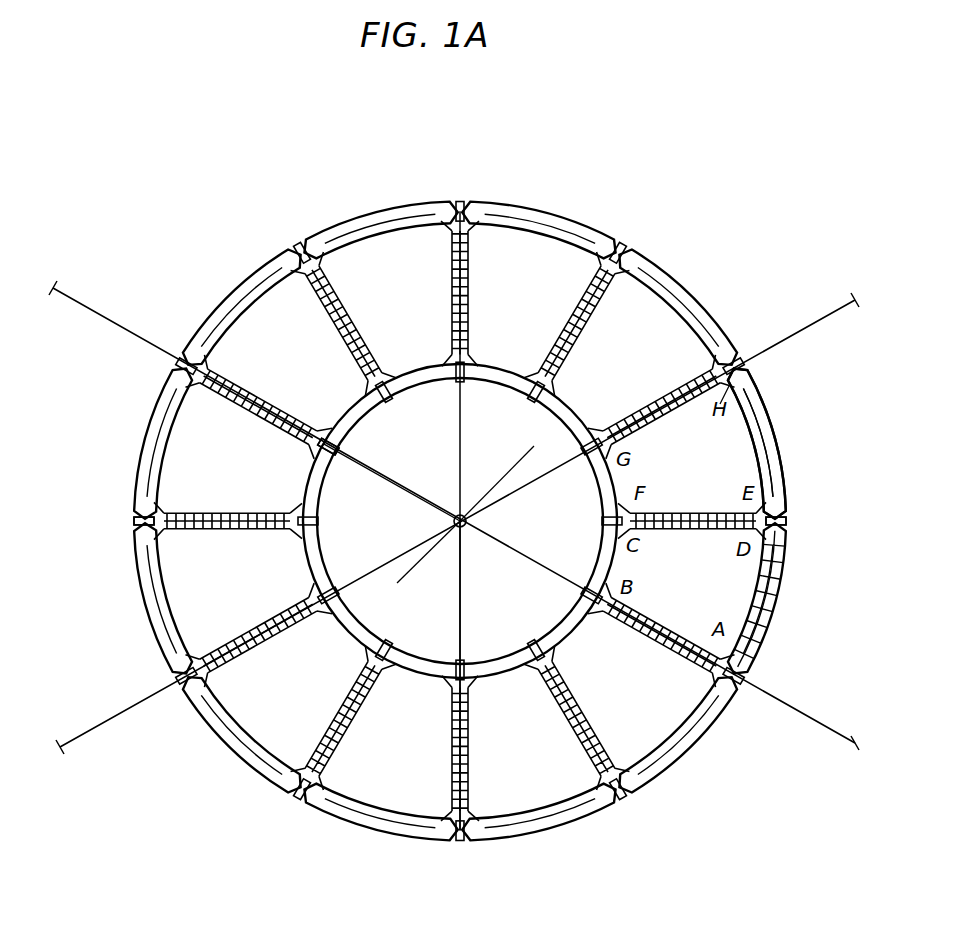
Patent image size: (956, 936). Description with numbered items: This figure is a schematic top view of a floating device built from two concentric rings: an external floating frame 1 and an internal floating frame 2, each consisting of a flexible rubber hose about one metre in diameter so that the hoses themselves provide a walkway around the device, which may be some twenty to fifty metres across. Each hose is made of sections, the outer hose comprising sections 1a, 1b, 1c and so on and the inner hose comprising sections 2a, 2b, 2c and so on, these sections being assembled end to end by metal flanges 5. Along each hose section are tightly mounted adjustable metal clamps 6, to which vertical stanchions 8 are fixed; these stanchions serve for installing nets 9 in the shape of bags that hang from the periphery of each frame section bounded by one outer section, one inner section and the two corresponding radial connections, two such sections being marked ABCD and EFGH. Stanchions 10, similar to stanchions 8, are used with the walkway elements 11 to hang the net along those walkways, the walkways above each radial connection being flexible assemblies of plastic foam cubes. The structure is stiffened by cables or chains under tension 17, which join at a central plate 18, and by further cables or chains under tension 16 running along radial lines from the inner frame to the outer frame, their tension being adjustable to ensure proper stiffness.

The external floating frame 1 is at (339, 210).
The hose section of external frame 1a is at (756, 658).
The hose section of external frame 1b is at (778, 446).
The hose section of external frame 1c is at (522, 212).
The internal floating frame 2 is at (698, 288).
The hose section of internal frame 2a is at (619, 540).
The hose section of internal frame 2b is at (500, 640).
The hose section of internal frame 2c is at (382, 640).
The metal flange 5 is at (330, 450).
The metal clamp 6 is at (795, 528).
The vertical stanchion 8 is at (772, 592).
The net 9 is at (706, 540).
The stanchion 10 is at (636, 625).
The walkway element 11 is at (692, 512).
The cables or chains under tension 16 is at (76, 300).
The cables or chains under tension 17 is at (408, 493).
The central plate 18 is at (490, 492).